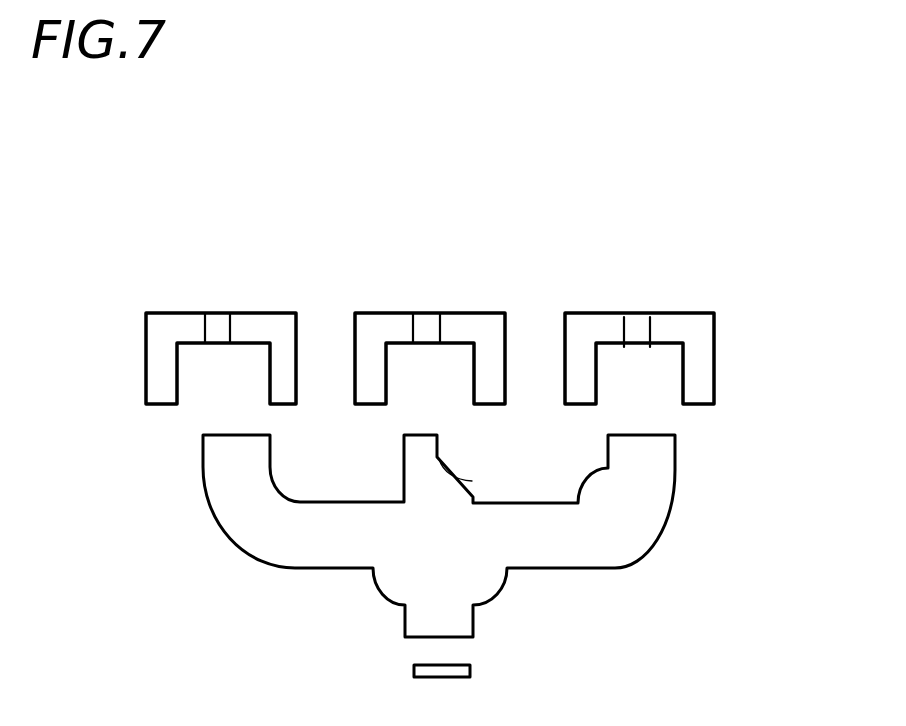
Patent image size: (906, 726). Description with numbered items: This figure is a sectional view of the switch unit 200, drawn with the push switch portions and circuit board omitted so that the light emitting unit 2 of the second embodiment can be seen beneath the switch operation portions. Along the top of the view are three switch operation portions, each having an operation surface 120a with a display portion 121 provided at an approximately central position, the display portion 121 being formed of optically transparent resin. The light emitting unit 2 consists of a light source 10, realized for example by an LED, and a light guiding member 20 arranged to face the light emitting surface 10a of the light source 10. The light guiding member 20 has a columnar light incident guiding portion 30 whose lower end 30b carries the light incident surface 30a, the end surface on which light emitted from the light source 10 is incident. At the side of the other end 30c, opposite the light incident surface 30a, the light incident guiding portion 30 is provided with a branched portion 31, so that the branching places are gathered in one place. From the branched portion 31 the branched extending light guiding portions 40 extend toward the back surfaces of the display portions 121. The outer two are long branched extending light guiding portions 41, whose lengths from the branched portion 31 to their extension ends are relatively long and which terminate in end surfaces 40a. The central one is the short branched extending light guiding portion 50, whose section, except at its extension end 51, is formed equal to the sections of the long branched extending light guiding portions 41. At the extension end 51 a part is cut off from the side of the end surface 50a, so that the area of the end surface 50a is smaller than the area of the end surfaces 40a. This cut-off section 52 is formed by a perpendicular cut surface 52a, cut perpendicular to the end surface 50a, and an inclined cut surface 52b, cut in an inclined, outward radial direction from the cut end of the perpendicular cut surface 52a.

The light emitting unit 2 is at (707, 600).
The light source 10 is at (485, 678).
The light emitting surface 10a is at (418, 660).
The light guiding member 20 is at (578, 580).
The light incident guiding portion 30 is at (418, 612).
The light incident surface 30a is at (448, 637).
The end 30b is at (405, 637).
The other end 30c is at (450, 553).
The branched portion 31 is at (403, 500).
The branched extending light guiding portions 40 is at (418, 457).
The end surfaces 40a is at (233, 434).
The long branched extending light guiding portions 41 is at (236, 493).
The short branched extending light guiding portion 50 is at (407, 450).
The end surface 50a is at (426, 435).
The extension end 51 is at (460, 462).
The cut-off section 52 is at (572, 482).
The perpendicular cut surface 52a is at (458, 470).
The inclined cut surface 52b is at (465, 478).
The operation surface 120a is at (262, 313).
The display portion 121 is at (222, 313).
The switch unit 200 is at (395, 248).